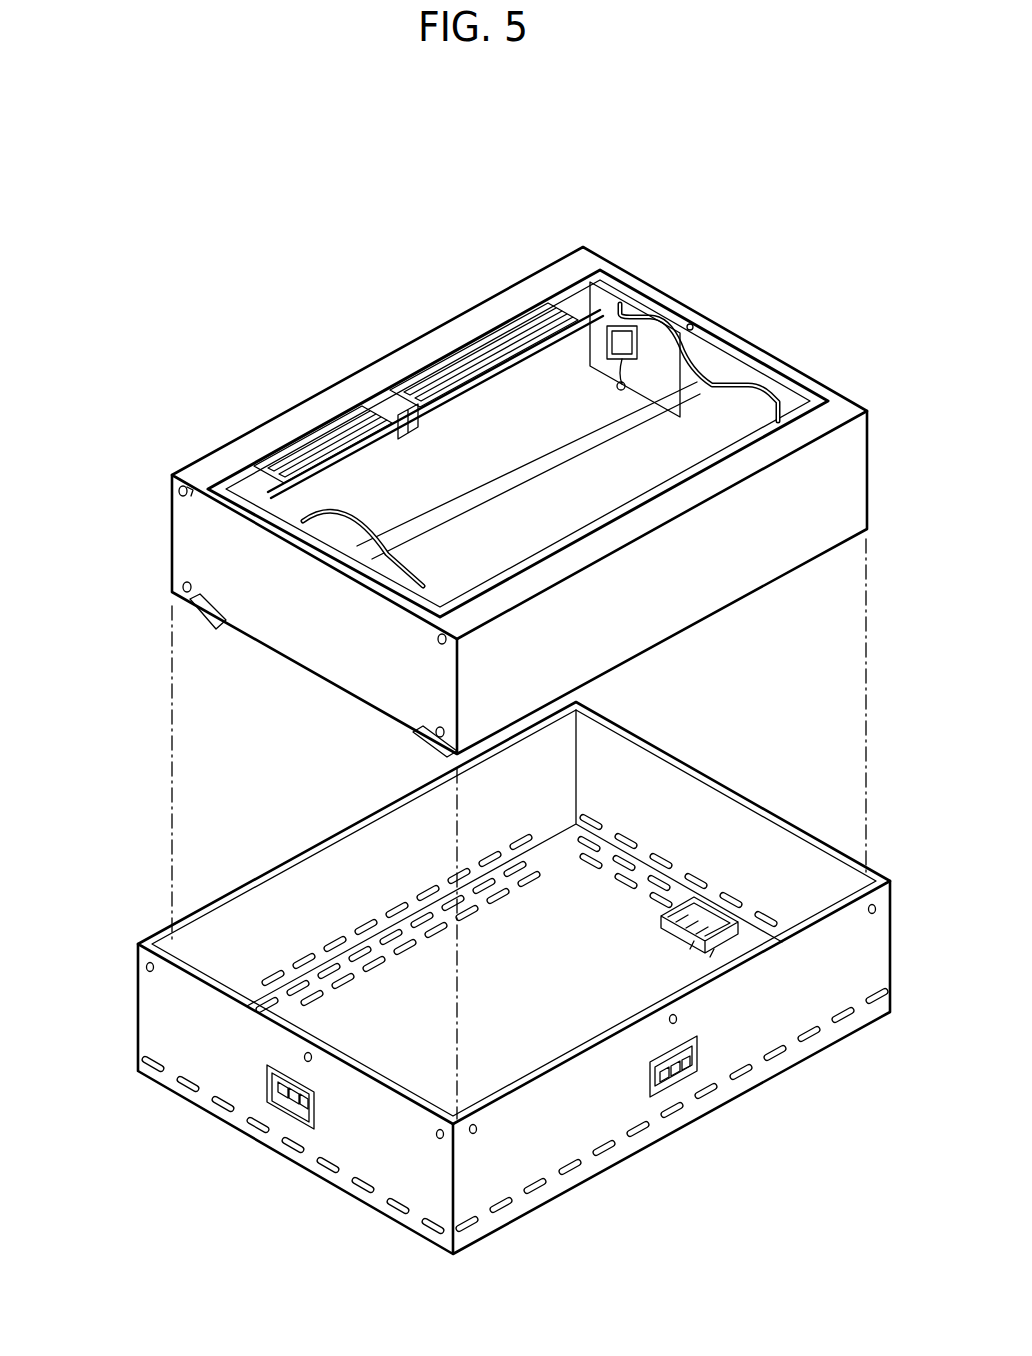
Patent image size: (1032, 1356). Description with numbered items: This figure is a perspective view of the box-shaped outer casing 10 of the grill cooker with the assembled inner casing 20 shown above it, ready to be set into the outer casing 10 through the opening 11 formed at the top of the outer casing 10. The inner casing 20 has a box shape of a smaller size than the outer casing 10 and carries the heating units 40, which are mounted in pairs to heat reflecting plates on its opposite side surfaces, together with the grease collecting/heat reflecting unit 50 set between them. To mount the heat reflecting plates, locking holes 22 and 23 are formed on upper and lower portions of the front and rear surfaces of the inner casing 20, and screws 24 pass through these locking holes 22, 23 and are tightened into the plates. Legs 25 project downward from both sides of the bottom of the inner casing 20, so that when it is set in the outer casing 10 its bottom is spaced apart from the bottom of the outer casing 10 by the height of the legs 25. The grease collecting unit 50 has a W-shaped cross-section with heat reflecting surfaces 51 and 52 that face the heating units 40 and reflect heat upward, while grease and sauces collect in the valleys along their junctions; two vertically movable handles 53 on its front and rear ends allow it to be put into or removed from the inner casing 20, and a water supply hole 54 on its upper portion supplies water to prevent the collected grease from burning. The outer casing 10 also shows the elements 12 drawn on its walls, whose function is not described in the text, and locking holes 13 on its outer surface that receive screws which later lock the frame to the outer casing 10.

The outer casing 10 is at (787, 1027).
The opening 11 is at (258, 910).
The connector 12 is at (736, 906).
The locking holes 13 is at (145, 970).
The inner casing 20 is at (674, 597).
The locking holes 22 is at (178, 490).
The locking holes 23 is at (190, 610).
The screws 24 is at (172, 590).
The legs 25 is at (200, 622).
The heating units 40 is at (358, 478).
The grease collecting/heat reflecting unit 50 is at (634, 272).
The heat reflecting surface 51 is at (598, 480).
The heat reflecting surface 52 is at (420, 470).
The handles 53 is at (715, 372).
The water supply hole 54 is at (692, 326).